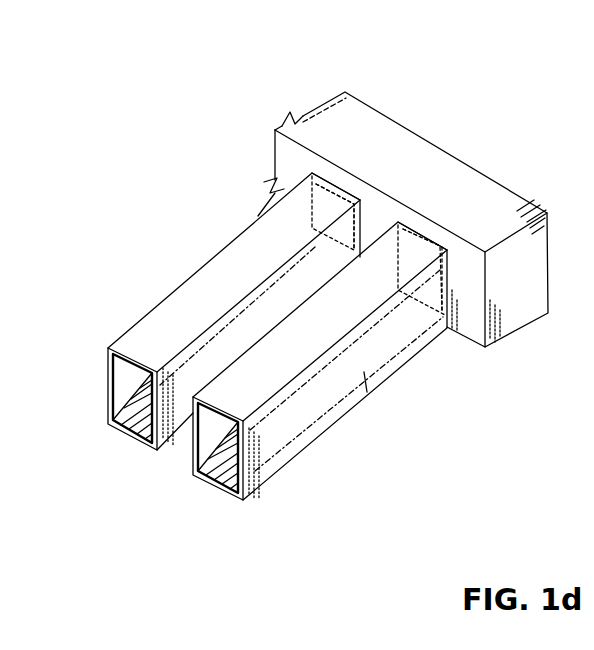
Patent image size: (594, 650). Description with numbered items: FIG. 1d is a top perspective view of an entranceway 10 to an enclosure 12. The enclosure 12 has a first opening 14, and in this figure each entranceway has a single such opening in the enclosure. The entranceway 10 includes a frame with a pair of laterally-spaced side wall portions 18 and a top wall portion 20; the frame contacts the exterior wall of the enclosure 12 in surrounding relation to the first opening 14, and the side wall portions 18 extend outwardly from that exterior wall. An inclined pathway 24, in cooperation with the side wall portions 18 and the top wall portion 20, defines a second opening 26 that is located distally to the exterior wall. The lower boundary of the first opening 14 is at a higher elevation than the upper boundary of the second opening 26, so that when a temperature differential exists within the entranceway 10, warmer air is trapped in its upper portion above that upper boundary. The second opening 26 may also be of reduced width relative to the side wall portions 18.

The entranceway 10 is at (207, 211).
The enclosure 12 is at (470, 127).
The first opening 14 is at (334, 218).
The side wall portions 18 is at (160, 408).
The top wall portion 20 is at (256, 222).
The inclined pathway 24 is at (296, 437).
The second opening 26 is at (125, 428).